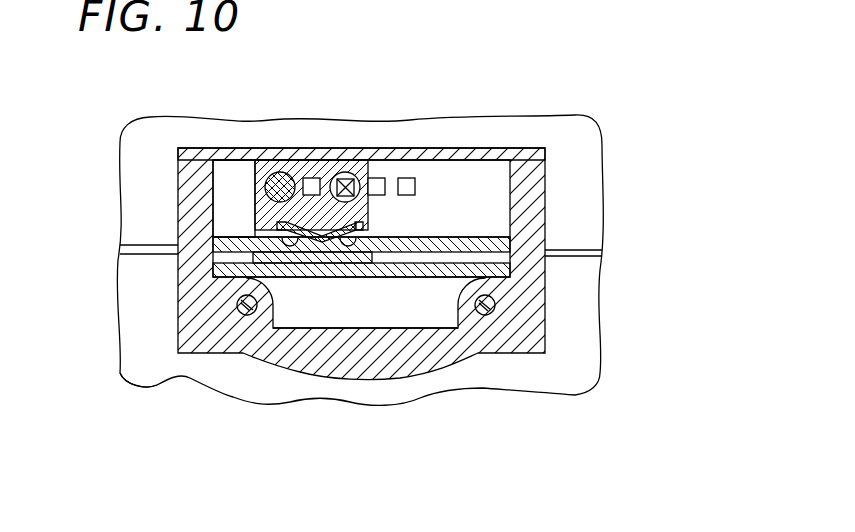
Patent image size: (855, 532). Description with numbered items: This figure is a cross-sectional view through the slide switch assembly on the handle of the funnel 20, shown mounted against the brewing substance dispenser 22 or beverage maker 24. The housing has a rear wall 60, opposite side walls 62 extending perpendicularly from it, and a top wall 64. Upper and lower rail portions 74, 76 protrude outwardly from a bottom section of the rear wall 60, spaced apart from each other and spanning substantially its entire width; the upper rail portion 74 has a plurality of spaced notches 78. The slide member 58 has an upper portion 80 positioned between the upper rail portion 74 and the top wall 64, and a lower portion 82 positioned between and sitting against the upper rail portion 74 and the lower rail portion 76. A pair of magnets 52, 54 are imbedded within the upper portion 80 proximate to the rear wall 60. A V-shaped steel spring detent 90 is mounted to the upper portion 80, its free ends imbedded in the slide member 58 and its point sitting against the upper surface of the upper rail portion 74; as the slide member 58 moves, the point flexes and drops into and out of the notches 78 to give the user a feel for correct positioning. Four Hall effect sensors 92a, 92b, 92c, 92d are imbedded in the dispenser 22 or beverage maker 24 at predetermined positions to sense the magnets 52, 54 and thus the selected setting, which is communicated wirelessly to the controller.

The funnel 20 is at (543, 373).
The brewing substance dispenser 22 is at (577, 155).
The beverage maker 24 is at (360, 389).
The magnet 52 is at (282, 183).
The magnet 54 is at (345, 172).
The slide member 58 is at (372, 160).
The rear wall 60 is at (313, 308).
The side walls 62 is at (190, 192).
The top wall 64 is at (232, 148).
The upper rail portion 74 is at (500, 243).
The lower rail portion 76 is at (512, 270).
The notches 78 is at (453, 240).
The upper portion 80 is at (245, 209).
The lower portion 82 is at (375, 278).
The spring detent 90 is at (332, 240).
The sensor 92a is at (312, 178).
The sensor 92b is at (352, 184).
The sensor 92c is at (384, 176).
The sensor 92d is at (417, 187).